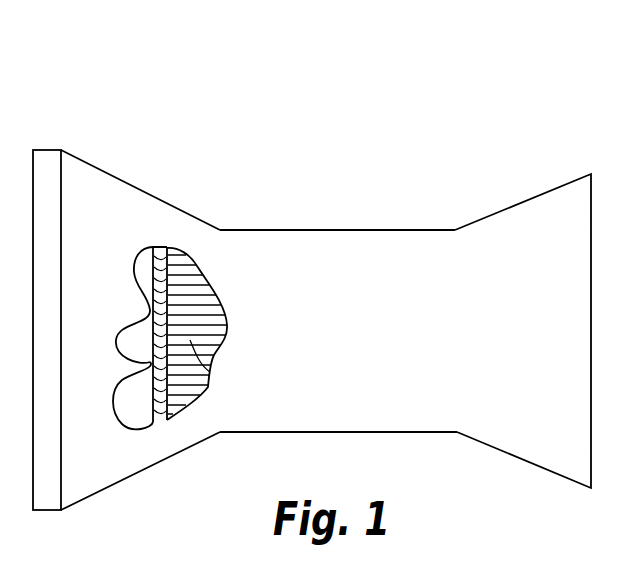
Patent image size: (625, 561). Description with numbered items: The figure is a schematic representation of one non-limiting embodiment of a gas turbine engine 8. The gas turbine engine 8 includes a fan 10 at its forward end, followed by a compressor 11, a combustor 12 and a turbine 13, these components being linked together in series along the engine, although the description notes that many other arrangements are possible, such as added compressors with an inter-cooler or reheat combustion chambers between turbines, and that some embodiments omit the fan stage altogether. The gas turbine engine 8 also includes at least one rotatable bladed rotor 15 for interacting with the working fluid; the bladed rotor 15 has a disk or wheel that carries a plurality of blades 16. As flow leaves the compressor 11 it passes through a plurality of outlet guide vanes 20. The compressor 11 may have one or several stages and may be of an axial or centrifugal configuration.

The gas turbine engine 8 is at (328, 114).
The fan 10 is at (45, 166).
The compressor 11 is at (113, 205).
The combustor 12 is at (313, 268).
The turbine 13 is at (516, 228).
The rotatable bladed rotor 15 is at (152, 322).
The blades 16 is at (152, 362).
The outlet guide vanes 20 is at (208, 372).